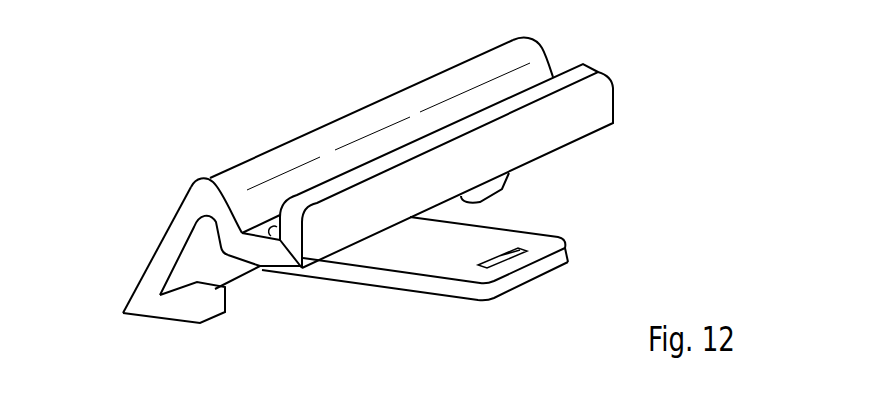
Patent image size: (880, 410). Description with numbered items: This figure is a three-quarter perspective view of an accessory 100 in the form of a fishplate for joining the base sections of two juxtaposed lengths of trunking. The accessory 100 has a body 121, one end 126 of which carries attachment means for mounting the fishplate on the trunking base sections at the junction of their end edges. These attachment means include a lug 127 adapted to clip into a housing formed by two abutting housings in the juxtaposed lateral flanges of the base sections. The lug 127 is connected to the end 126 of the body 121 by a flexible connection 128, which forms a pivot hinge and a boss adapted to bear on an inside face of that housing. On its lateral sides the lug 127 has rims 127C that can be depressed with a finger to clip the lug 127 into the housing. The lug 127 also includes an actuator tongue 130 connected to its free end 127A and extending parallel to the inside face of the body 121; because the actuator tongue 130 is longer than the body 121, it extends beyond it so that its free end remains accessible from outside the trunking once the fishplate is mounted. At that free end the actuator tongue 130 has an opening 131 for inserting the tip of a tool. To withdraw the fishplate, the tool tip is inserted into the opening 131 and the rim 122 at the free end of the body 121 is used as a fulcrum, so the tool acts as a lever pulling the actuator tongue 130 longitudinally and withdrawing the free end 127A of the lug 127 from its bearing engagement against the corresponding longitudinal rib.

The accessory 100 is at (582, 36).
The body 121 is at (271, 236).
The rim 122 is at (597, 95).
The end 126 is at (260, 266).
The lug 127 is at (150, 234).
The free end 127A is at (220, 223).
The rims 127C is at (187, 296).
The flexible connection 128 is at (247, 175).
The actuator tongue 130 is at (480, 238).
The opening 131 is at (500, 255).